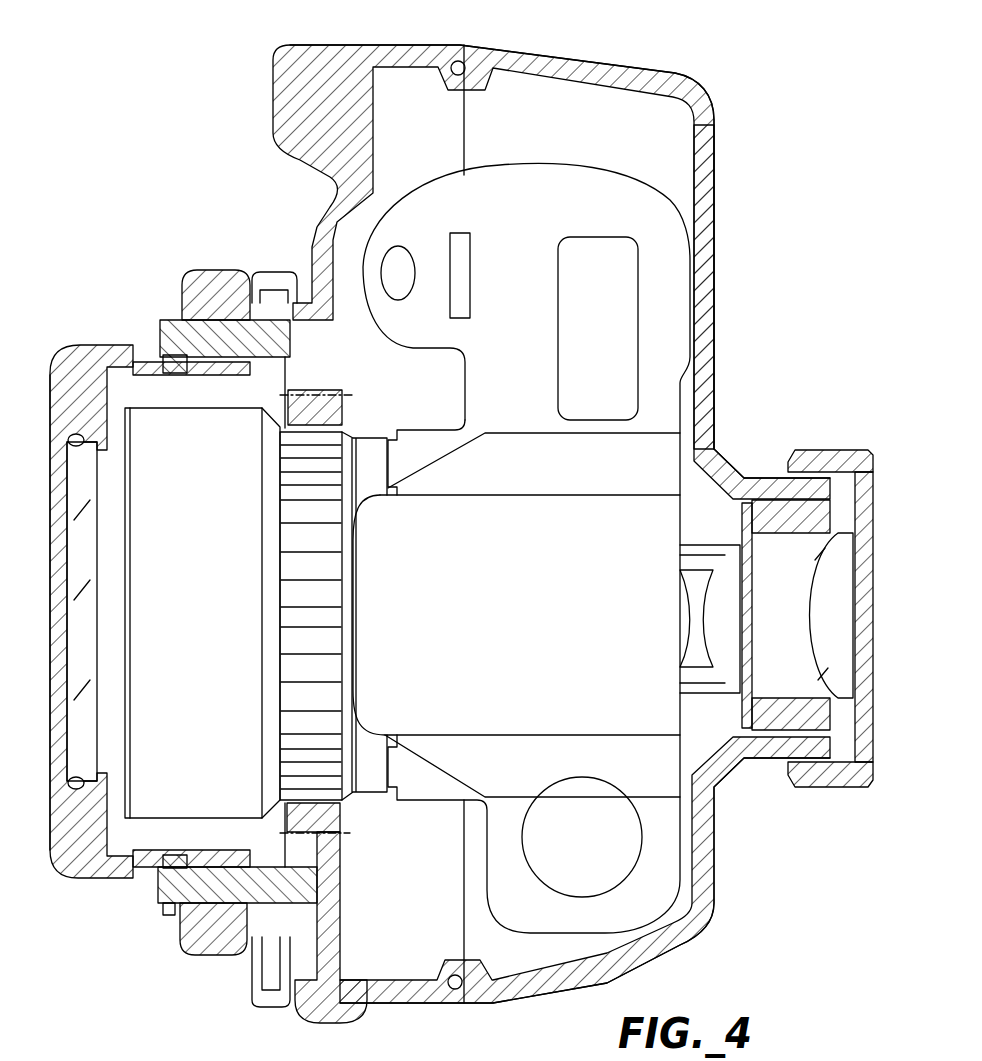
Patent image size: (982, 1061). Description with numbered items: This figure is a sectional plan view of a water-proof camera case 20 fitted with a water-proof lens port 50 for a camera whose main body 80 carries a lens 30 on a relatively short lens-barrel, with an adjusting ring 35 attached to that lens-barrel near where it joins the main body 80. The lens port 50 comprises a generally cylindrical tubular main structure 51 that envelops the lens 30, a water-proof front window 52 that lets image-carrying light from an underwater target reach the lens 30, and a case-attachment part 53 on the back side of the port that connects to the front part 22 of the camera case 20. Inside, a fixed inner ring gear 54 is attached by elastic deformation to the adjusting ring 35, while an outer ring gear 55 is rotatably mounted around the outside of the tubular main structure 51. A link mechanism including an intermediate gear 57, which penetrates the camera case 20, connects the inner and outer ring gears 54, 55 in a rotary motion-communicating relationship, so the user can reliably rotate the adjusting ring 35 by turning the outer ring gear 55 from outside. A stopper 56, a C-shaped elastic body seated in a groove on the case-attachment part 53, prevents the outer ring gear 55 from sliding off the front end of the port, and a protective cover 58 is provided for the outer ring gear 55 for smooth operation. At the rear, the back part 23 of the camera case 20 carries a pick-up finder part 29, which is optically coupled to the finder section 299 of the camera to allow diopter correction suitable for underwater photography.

The camera case 20 is at (645, 40).
The front part of the camera case 22 is at (292, 102).
The back part of the camera case 23 is at (714, 163).
The pick-up finder part 29 is at (837, 450).
The lens 30 is at (148, 430).
The adjusting ring 35 is at (330, 633).
The water-proof lens port 50 is at (160, 168).
The tubular main structure 51 is at (108, 873).
The water-proof front window 52 is at (75, 517).
The case-attachment part 53 is at (163, 883).
The fixed inner ring gear 54 is at (327, 818).
The outer ring gear 55 is at (210, 287).
The stopper 56 is at (167, 905).
The intermediate gear 57 is at (330, 955).
The protective cover 58 is at (277, 273).
The main body of the camera 80 is at (627, 913).
The finder section of the camera 299 is at (622, 692).